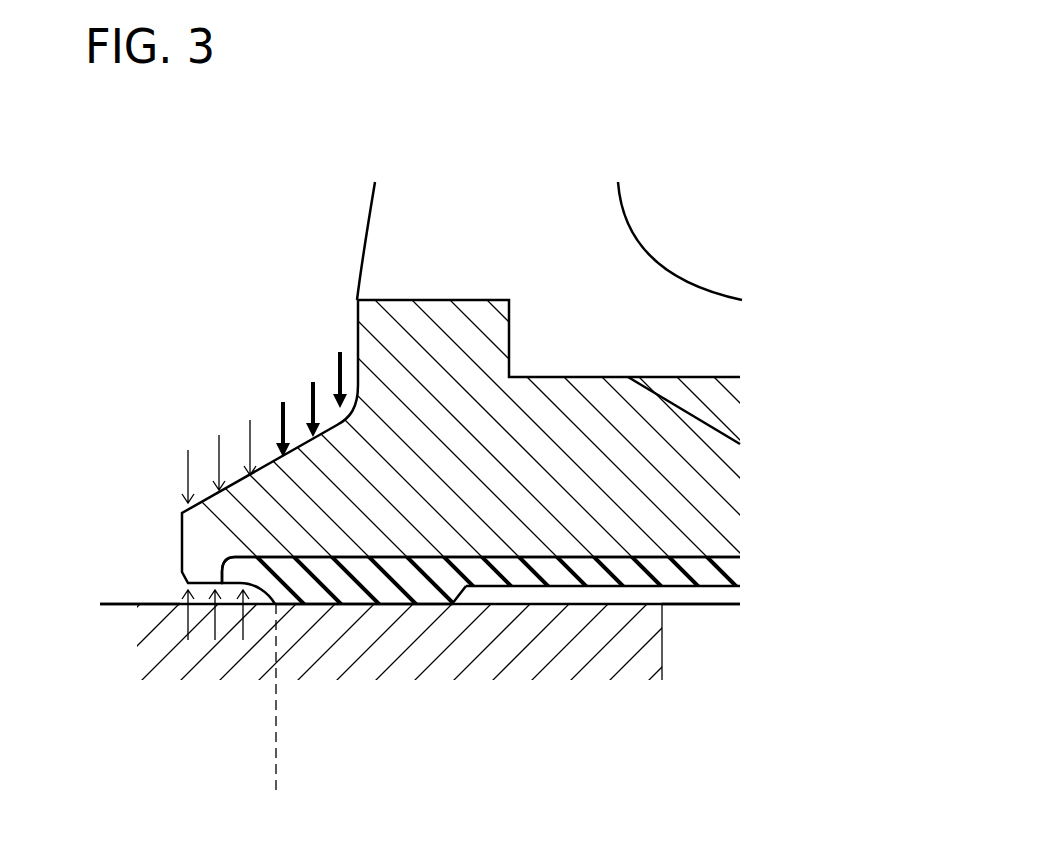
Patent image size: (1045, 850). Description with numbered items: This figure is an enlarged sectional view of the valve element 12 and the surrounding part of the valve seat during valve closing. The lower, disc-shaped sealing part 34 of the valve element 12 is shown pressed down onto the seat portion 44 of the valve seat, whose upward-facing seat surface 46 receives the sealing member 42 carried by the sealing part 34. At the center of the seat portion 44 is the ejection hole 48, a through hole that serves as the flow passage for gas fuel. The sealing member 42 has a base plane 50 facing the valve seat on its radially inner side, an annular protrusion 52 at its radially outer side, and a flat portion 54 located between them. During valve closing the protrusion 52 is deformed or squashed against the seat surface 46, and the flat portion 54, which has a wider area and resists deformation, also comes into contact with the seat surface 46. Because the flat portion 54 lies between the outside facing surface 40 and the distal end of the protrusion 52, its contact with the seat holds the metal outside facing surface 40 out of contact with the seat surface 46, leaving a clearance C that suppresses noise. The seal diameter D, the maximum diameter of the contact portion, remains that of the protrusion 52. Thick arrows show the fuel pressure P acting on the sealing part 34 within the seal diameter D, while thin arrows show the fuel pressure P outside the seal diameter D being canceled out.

The valve element 12 is at (549, 313).
The sealing part 34 is at (210, 360).
The outside facing surface 40 is at (205, 592).
The sealing member 42 is at (700, 596).
The seat portion 44 is at (147, 653).
The seat surface 46 is at (155, 603).
The ejection hole 48 is at (662, 648).
The base plane 50 is at (557, 588).
The protrusion 52 is at (335, 584).
The flat portion 54 is at (438, 604).
The fuel pressure P is at (288, 408).
The clearance C is at (228, 592).
The seal diameter D is at (276, 774).